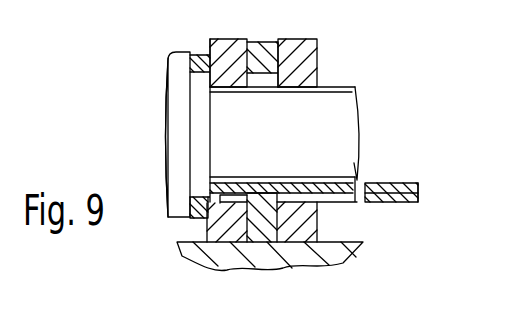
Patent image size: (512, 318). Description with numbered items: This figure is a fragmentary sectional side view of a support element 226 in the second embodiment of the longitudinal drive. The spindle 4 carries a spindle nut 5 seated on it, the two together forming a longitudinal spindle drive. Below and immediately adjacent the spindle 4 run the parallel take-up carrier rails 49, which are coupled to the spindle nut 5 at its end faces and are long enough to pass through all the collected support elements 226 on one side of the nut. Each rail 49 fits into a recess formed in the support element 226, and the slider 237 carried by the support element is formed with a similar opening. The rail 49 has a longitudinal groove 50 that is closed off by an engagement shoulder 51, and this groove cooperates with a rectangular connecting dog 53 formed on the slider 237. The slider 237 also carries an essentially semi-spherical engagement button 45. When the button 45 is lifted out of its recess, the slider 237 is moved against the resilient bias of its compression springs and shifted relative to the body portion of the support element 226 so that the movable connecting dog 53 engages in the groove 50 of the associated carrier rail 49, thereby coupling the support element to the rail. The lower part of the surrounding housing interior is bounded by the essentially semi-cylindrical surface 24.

The spindle nut 5 is at (180, 110).
The support element 226 is at (316, 45).
The spindle 4 is at (345, 112).
The connecting dog 53 is at (305, 180).
The take-up carrier rail 49 is at (362, 182).
The longitudinal groove 50 is at (380, 198).
The engagement shoulder 51 is at (420, 193).
The slider 237 is at (208, 207).
The engagement button projection 45 is at (240, 248).
The semi-cylindrical surface 24 is at (337, 242).